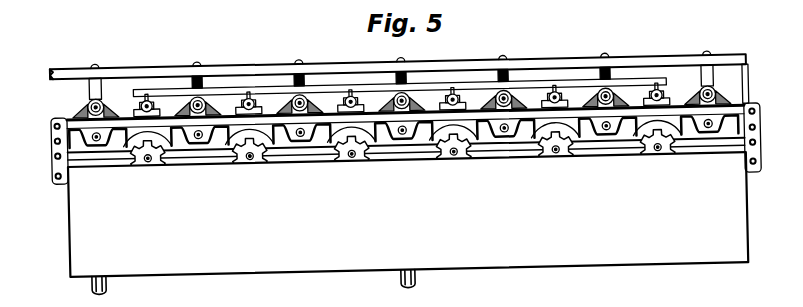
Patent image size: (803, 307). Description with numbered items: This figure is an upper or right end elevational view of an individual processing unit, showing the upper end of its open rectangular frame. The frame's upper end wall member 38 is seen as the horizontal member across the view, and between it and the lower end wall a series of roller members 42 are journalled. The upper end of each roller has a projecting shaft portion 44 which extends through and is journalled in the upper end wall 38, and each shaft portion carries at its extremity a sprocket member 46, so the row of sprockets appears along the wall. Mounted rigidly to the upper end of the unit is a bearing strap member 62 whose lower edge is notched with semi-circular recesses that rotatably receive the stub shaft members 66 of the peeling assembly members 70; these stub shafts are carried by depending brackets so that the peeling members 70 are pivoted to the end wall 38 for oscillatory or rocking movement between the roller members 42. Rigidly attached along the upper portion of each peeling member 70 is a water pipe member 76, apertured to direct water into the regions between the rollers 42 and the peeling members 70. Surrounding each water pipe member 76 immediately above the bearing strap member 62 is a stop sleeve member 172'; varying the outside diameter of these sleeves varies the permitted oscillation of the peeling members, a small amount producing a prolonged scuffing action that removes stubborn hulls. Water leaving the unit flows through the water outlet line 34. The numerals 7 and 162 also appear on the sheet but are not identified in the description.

The water pipe member 76 is at (195, 101).
The stop sleeve member 172' is at (401, 70).
The cross bar 7 is at (399, 63).
The bearing strap member 62 is at (638, 121).
The upper end wall member 38 is at (72, 159).
The roller member 42 is at (152, 148).
The sprocket member 46 is at (157, 152).
The projecting shaft portion 44 is at (248, 165).
The stub shaft member 66 is at (198, 143).
The peeling assembly member 70 is at (276, 148).
The water outlet line 34 is at (412, 286).
The element of adjacent figure 162 is at (752, 297).